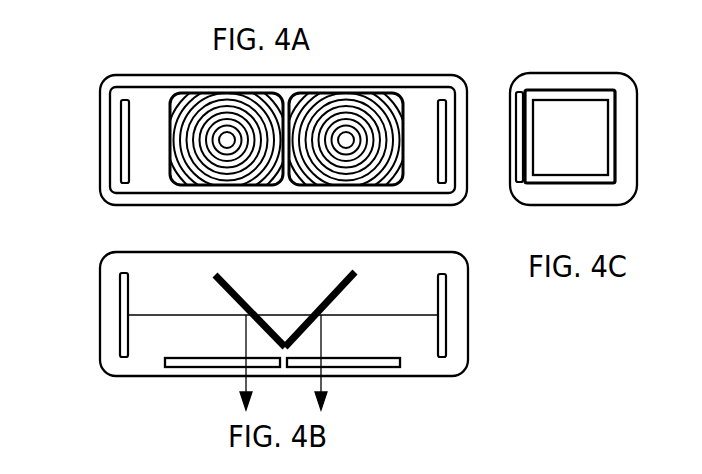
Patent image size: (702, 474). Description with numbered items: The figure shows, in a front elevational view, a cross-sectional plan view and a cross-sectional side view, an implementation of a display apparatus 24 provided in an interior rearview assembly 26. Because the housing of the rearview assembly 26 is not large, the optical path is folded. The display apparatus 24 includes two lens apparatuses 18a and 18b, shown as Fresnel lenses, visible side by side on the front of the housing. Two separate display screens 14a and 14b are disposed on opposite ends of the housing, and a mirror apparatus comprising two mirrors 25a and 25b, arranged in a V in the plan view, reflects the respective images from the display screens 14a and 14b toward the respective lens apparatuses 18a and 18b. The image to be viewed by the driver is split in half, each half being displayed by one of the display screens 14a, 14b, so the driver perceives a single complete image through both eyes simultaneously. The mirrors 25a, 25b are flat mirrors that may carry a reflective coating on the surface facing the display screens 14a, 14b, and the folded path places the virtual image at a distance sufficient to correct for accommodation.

In FIG. 4A, the display apparatus 24 is at (126, 46).
In FIG. 4B, the display apparatus 24 is at (360, 420).
In FIG. 4C, the display apparatus 24 is at (634, 49).
In FIG. 4A, the interior rearview assembly 26 is at (245, 205).
In FIG. 4B, the interior rearview assembly 26 is at (455, 376).
In FIG. 4C, the interior rearview assembly 26 is at (573, 73).
In FIG. 4A, the display screen 14a is at (121, 150).
In FIG. 4B, the display screen 14a is at (120, 340).
In FIG. 4A, the display screen 14b is at (441, 184).
In FIG. 4B, the display screen 14b is at (446, 305).
In FIG. 4C, the display screen 14b is at (572, 164).
In FIG. 4A, the lens apparatus 18a is at (213, 98).
In FIG. 4B, the lens apparatus 18a is at (205, 368).
In FIG. 4A, the lens apparatus 18b is at (322, 98).
In FIG. 4B, the lens apparatus 18b is at (380, 368).
In FIG. 4C, the lens apparatus 18b is at (517, 93).
In FIG. 4B, the mirror 25a is at (213, 280).
In FIG. 4B, the mirror 25b is at (355, 273).
In FIG. 4C, the mirror 25b is at (615, 158).